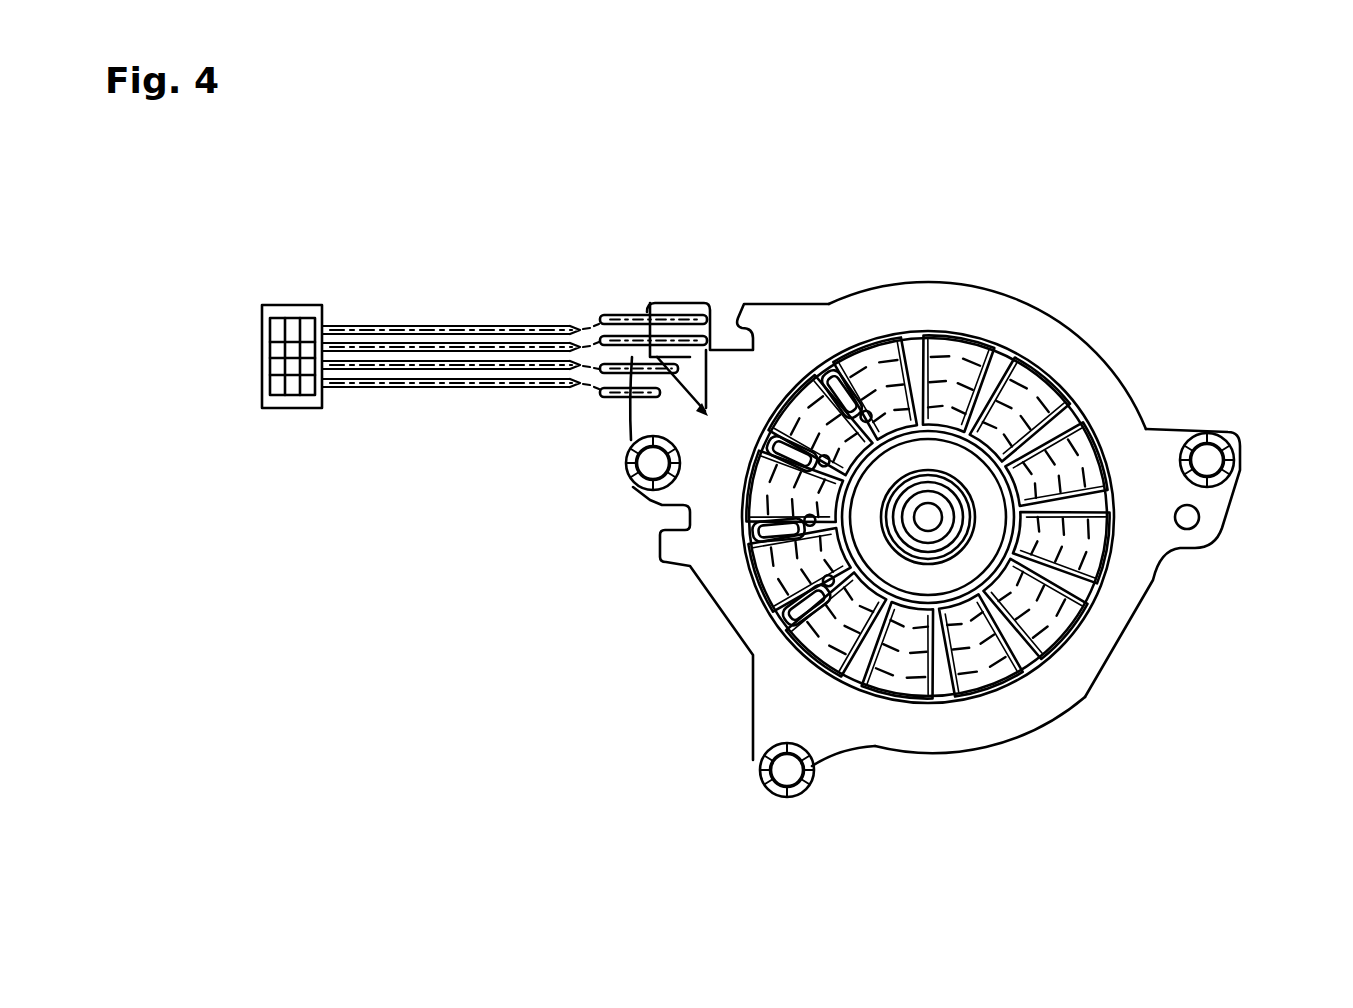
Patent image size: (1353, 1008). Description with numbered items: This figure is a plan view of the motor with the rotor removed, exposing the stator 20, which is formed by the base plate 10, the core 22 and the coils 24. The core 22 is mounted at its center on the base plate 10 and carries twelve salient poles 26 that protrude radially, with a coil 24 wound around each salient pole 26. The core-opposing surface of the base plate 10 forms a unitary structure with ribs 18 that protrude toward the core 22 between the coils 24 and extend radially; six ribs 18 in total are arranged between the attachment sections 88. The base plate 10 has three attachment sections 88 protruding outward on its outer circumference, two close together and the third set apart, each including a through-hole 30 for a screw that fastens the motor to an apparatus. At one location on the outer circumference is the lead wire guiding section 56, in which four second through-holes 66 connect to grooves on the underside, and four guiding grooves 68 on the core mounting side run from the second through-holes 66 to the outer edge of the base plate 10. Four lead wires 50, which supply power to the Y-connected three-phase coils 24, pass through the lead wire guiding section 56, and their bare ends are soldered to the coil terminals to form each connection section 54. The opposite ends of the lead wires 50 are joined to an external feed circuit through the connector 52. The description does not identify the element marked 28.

The base plate 10 is at (1107, 425).
The ribs 18 is at (920, 400).
The stator 20 is at (1040, 727).
The core 22 is at (910, 585).
The coil 24 is at (1020, 400).
The salient poles 26 is at (1130, 500).
The stator slot 28 is at (1040, 556).
The through-hole 30 is at (633, 487).
The lead wires 50 is at (518, 383).
The connector 52 is at (292, 305).
The connection section 54 is at (838, 392).
The lead wire guiding section 56 is at (657, 292).
The second through-holes 66 is at (700, 400).
The guiding grooves 68 is at (678, 340).
The attachment sections 88 is at (627, 458).